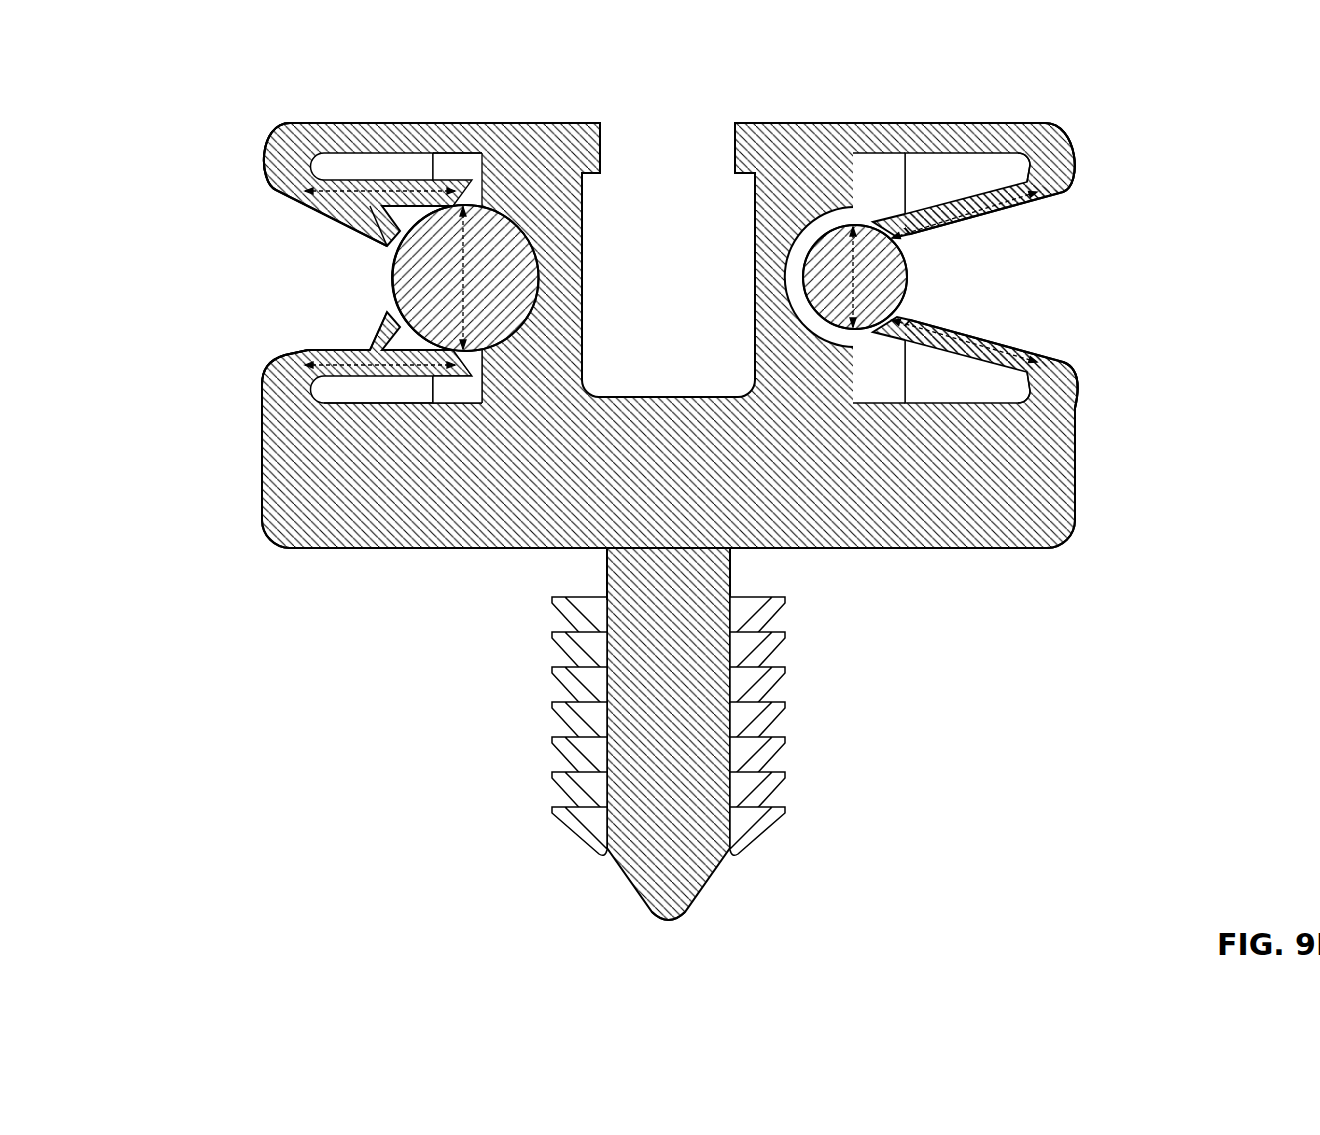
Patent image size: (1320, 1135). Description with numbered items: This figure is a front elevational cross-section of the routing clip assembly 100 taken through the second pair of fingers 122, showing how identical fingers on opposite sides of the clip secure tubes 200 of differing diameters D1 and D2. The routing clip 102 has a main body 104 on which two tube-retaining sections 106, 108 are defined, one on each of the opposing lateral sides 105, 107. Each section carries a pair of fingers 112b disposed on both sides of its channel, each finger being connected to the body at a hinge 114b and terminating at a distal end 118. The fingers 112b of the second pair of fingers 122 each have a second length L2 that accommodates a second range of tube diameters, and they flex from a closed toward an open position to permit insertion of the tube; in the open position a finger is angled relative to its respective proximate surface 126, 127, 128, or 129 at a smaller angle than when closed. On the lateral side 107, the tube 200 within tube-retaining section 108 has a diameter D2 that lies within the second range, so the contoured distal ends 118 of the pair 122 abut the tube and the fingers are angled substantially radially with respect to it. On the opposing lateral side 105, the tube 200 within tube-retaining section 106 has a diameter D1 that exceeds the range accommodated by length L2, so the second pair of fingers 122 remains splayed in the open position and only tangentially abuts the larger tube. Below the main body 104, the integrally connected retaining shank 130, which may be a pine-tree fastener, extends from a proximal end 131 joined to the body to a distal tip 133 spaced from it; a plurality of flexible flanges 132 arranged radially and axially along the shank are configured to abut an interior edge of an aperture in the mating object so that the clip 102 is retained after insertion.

The routing clip assembly 100 is at (1117, 83).
The routing clip 102 is at (772, 549).
The main body 104 is at (767, 150).
The lateral side 105 is at (262, 438).
The tube-retaining section 106 is at (173, 243).
The lateral side 107 is at (1080, 472).
The tube-retaining section 108 is at (1133, 287).
The finger 112b is at (348, 180).
The hinge 114b is at (267, 158).
The distal end 118 is at (488, 172).
The second pair of fingers 122 is at (372, 238).
The proximate surface 126 is at (445, 160).
The proximate surface 127 is at (378, 403).
The proximate surface 128 is at (993, 163).
The proximate surface 129 is at (1012, 403).
The retaining shank 130 is at (673, 750).
The proximal end 131 is at (607, 562).
The flexible flange 132 is at (552, 703).
The distal tip 133 is at (670, 922).
The tube 200 is at (650, 278).
The diameter D1 is at (468, 278).
The diameter D2 is at (852, 297).
The second length L2 is at (383, 342).